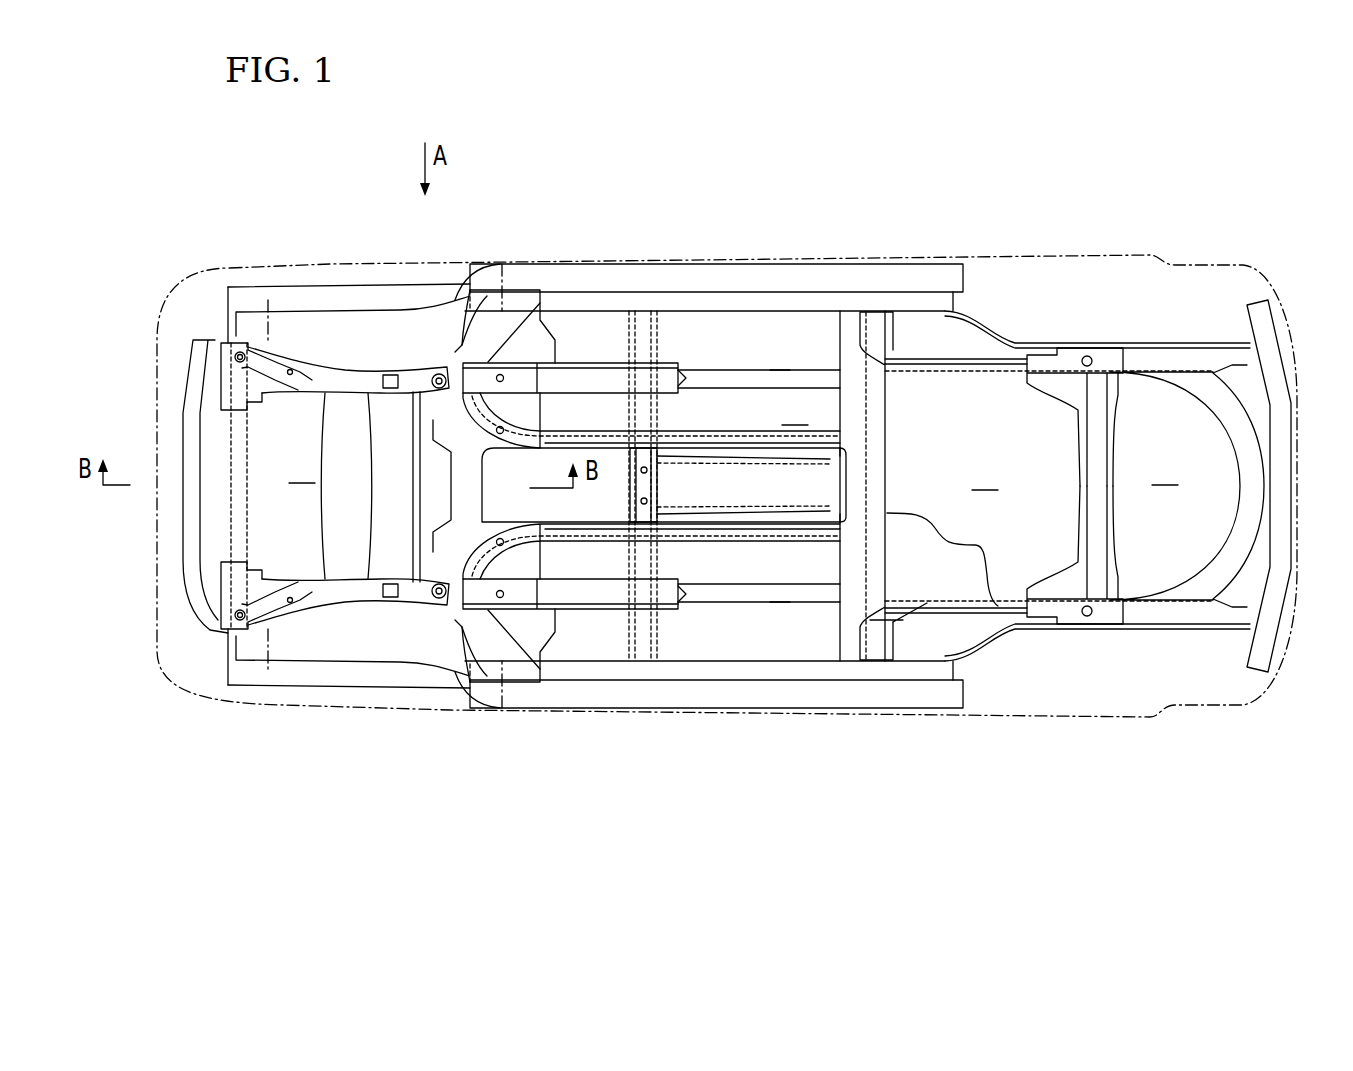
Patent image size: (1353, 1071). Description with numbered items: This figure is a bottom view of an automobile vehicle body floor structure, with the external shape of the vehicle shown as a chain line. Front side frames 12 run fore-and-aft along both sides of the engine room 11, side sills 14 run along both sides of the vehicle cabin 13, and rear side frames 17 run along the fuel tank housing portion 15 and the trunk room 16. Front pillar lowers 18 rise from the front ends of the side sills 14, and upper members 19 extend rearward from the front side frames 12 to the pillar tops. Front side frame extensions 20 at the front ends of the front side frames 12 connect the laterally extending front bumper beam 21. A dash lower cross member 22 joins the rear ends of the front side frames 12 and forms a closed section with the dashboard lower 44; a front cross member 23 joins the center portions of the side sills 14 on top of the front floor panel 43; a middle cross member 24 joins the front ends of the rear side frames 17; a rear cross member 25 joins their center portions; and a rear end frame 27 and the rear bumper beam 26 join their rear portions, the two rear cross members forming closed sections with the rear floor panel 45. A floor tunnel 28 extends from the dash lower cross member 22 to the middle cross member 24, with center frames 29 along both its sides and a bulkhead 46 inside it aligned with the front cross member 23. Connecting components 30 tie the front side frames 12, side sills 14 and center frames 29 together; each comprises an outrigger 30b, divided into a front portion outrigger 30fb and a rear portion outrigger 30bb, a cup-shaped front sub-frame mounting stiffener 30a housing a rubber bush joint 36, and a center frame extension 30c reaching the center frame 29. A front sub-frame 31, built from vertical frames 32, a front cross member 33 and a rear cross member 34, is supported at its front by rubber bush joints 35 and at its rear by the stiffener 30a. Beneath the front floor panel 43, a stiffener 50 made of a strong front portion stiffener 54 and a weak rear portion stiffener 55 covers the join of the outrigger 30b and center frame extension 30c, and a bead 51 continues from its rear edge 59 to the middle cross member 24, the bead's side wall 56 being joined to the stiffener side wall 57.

The engine room 11 is at (302, 469).
The front side frame 12 is at (325, 355).
The vehicle cabin 13 is at (795, 411).
The side sill 14 is at (834, 275).
The fuel tank housing portion 15 is at (985, 476).
The trunk room 16 is at (1165, 471).
The rear side frame 17 is at (985, 335).
The front pillar lower 18 is at (487, 330).
The upper member 19 is at (368, 286).
The front side frame extension 20 is at (220, 290).
The front bumper beam 21 is at (198, 592).
The dash lower cross member 22 is at (430, 483).
The front cross member 23 is at (720, 320).
The middle cross member 24 is at (890, 418).
The rear cross member 25 is at (1078, 510).
The rear bumper beam 26 is at (1292, 460).
The rear end frame 27 is at (1238, 535).
The floor tunnel 28 is at (812, 482).
The center frame 29 is at (690, 443).
The connecting component 30 is at (543, 340).
The front sub-frame mounting stiffener 30a is at (430, 325).
The outrigger 30b is at (519, 518).
The front portion outrigger 30fb is at (450, 340).
The rear portion outrigger 30bb is at (517, 325).
The center frame extension 30c is at (516, 432).
The front sub-frame 31 is at (258, 490).
The vertical frame 32 is at (322, 380).
The front cross member 33 is at (242, 460).
The rear cross member 34 is at (388, 463).
The rubber bush joint 35 is at (268, 300).
The rubber bush joint 36 is at (441, 390).
The front floor panel 43 is at (812, 561).
The dashboard lower 44 is at (430, 322).
The rear floor panel 45 is at (965, 580).
The bulkhead 46 is at (658, 489).
The stiffener 50 is at (665, 498).
The bead 51 is at (773, 361).
The front portion stiffener 54 is at (552, 355).
The rear portion stiffener 55 is at (655, 345).
The side wall 56 is at (731, 368).
The side wall 57 is at (597, 366).
The rear edge 59 is at (684, 378).